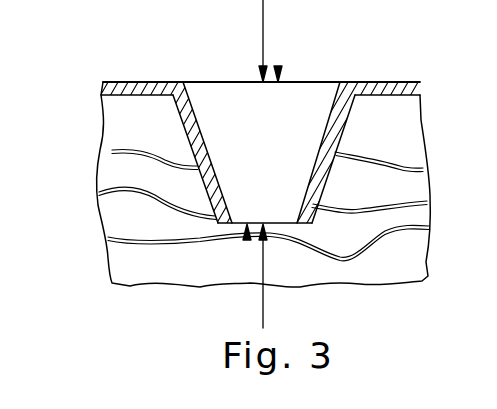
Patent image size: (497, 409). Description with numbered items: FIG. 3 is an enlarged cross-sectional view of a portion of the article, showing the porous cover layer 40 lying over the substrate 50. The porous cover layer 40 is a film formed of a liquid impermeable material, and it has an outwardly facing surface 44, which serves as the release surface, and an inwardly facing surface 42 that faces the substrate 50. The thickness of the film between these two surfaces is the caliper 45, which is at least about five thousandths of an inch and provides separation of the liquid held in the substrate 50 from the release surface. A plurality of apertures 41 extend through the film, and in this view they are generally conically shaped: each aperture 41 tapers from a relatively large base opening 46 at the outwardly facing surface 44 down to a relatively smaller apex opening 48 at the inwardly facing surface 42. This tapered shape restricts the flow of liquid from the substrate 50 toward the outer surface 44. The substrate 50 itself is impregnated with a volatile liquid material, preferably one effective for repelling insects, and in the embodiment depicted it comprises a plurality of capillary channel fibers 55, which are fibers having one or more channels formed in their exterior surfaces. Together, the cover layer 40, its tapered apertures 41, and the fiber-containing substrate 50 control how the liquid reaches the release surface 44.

The porous cover layer 40 is at (110, 59).
The apertures 41 is at (238, 127).
The inwardly facing surface 42 is at (302, 224).
The outwardly facing surface 44 is at (358, 82).
The caliper 45 is at (263, 20).
The base opening 46 is at (278, 66).
The apex opening 48 is at (247, 240).
The substrate 50 is at (395, 306).
The capillary channel fibers 55 is at (373, 163).